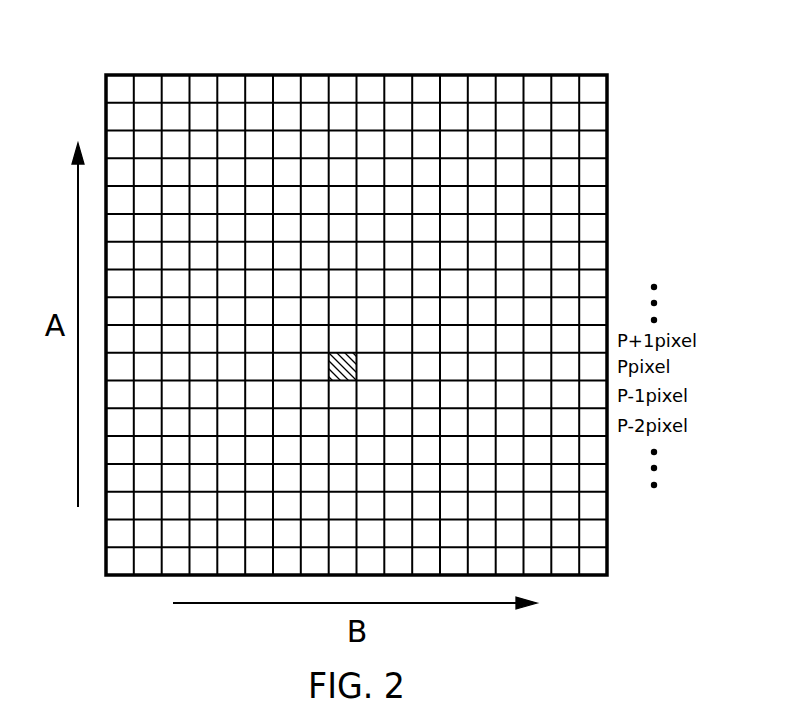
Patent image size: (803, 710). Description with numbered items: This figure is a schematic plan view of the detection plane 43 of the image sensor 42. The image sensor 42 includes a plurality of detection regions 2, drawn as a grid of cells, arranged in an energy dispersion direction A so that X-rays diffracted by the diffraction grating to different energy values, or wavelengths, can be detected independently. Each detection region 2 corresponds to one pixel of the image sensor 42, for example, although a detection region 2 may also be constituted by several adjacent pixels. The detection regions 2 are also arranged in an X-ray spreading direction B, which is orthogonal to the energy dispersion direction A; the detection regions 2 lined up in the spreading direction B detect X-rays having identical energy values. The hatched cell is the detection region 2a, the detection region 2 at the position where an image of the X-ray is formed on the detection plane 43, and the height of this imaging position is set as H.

The detection region 2 is at (122, 85).
The detection region 2a is at (357, 366).
The image sensor 42 is at (397, 298).
The detection plane 43 is at (618, 227).